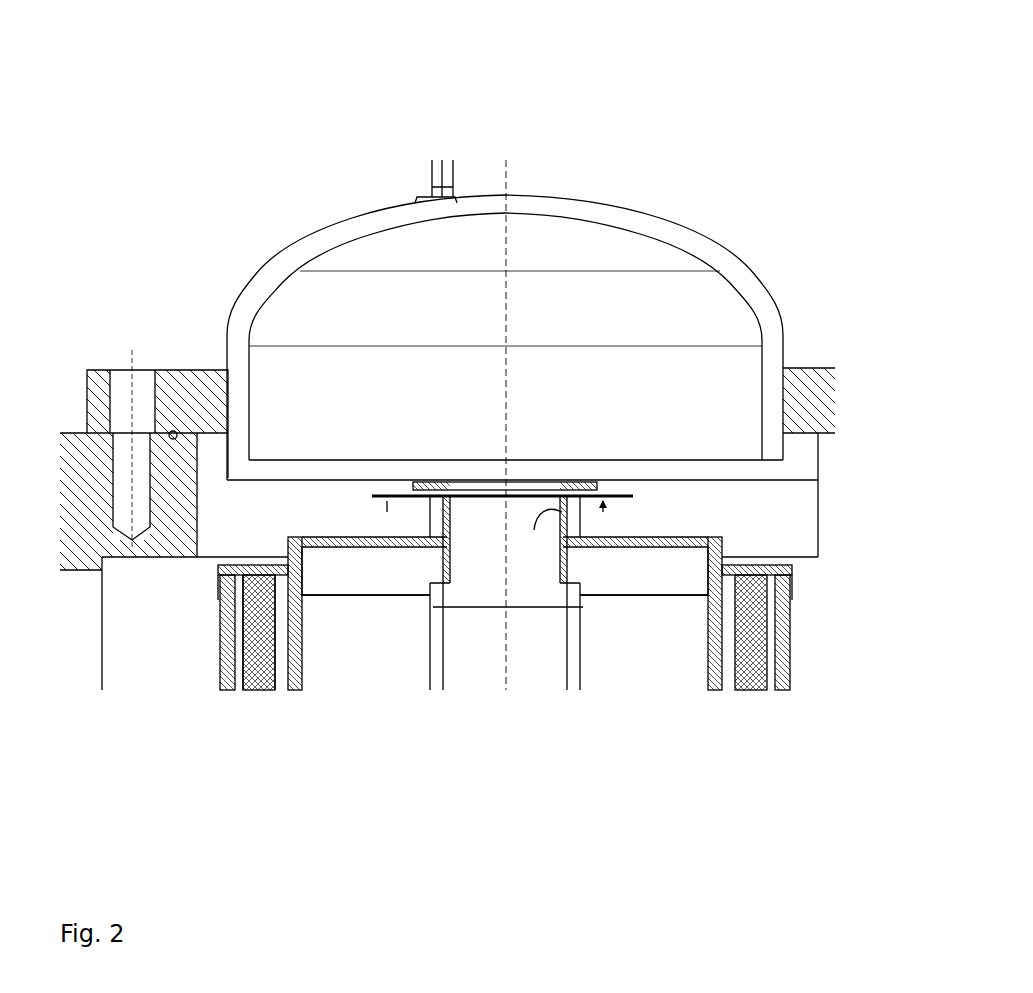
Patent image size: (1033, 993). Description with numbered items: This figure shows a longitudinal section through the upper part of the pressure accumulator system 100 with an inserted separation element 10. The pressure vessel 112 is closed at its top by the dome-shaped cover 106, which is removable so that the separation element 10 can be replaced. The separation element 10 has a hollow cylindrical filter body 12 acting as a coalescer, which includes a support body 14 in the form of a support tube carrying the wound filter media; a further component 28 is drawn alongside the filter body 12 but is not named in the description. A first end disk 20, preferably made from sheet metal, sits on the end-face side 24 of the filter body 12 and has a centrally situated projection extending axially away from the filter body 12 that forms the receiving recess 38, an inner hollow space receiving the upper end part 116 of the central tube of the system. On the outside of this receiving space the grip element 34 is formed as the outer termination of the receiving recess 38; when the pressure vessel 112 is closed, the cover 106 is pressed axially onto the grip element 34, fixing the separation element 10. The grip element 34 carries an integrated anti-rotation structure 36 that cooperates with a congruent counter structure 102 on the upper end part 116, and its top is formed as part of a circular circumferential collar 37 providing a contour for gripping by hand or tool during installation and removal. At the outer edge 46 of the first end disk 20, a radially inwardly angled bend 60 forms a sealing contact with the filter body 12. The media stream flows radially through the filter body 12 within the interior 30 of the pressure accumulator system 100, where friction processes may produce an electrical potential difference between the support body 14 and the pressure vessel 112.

The pressure accumulator system 100 is at (658, 118).
The cover 106 is at (633, 213).
The pressure vessel 112 is at (77, 470).
The separation element 10 is at (641, 694).
The grip element 34 is at (470, 481).
The circular circumferential collar 37 is at (413, 484).
The anti-rotation structure 36 is at (583, 537).
The counter structure 102 is at (565, 556).
The upper end part 116 is at (543, 573).
The receiving recess 38 is at (540, 496).
The first end disk 20 is at (310, 537).
The end-face side 24 is at (245, 541).
The interior 30 is at (360, 674).
The support body 14 is at (300, 690).
The outer edge 46 is at (208, 583).
The radially inwardly angled bend 60 is at (213, 595).
The sealing element 28 is at (233, 660).
The filter body 12 is at (248, 690).